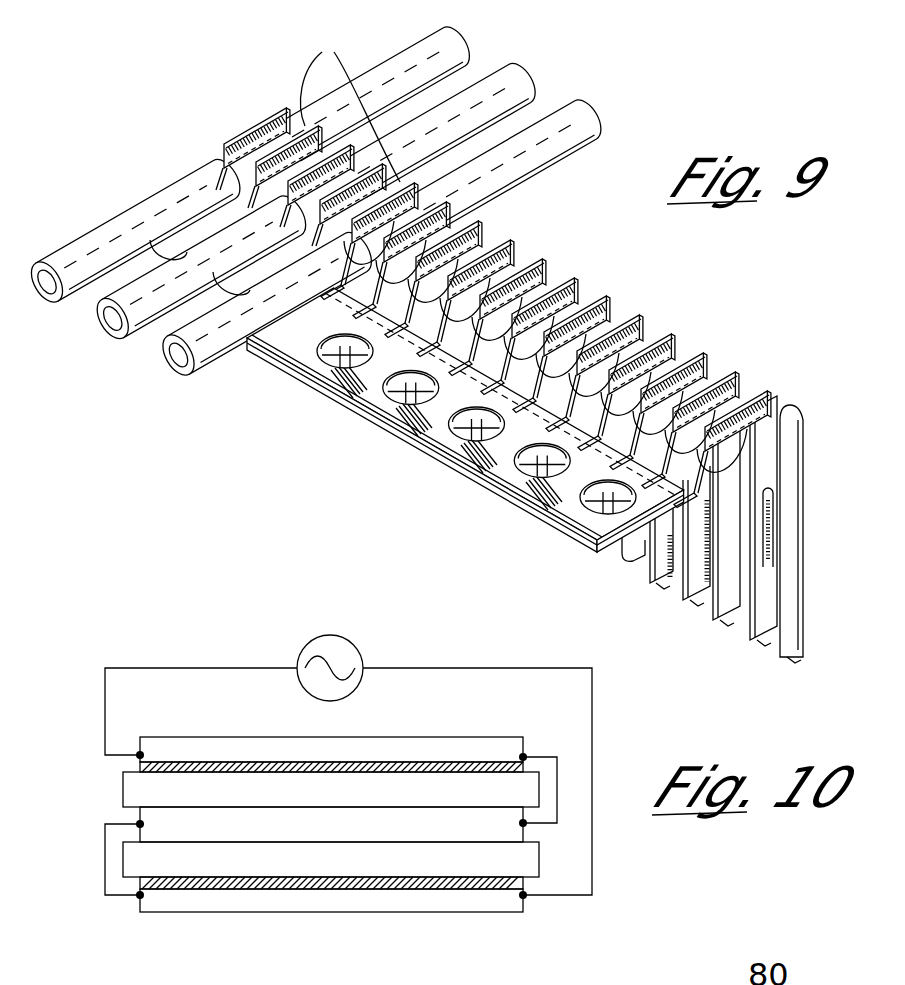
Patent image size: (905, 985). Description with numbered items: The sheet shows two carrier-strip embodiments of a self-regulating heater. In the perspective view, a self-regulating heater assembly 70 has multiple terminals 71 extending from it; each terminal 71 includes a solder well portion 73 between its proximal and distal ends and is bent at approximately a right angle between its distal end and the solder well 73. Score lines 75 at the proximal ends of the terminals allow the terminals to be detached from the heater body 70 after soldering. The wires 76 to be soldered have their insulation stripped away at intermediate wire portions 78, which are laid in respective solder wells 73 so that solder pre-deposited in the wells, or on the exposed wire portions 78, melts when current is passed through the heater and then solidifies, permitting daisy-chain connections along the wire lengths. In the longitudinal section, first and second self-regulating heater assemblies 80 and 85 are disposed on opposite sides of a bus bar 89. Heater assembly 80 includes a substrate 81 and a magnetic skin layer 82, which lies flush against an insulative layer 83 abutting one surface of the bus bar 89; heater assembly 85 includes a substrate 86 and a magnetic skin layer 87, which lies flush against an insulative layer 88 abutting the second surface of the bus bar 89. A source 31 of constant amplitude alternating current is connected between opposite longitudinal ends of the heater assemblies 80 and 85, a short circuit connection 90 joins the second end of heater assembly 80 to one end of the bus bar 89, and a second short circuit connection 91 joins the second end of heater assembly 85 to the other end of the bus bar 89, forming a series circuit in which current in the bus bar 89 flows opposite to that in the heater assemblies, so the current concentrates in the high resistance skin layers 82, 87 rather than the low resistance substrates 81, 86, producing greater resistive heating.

In FIG. 9, the self-regulating heater assembly 70 is at (490, 480).
In FIG. 9, the terminals 71 is at (787, 647).
In FIG. 9, the solder well portion 73 is at (266, 112).
In FIG. 9, the score lines 75 is at (505, 322).
In FIG. 9, the wires 76 is at (165, 358).
In FIG. 9, the exposed wire portions 78 is at (350, 95).
In FIG. 10, the first self-regulating heater assembly 80 is at (492, 700).
In FIG. 10, the source of constant amplitude alternating current 31 is at (308, 641).
In FIG. 10, the substrate 81 is at (260, 750).
In FIG. 10, the magnetic skin layer 82 is at (387, 760).
In FIG. 10, the insulative layer 83 is at (534, 768).
In FIG. 10, the second self-regulating heater assembly 85 is at (543, 920).
In FIG. 10, the substrate 86 is at (272, 902).
In FIG. 10, the magnetic skin layer 87 is at (367, 893).
In FIG. 10, the insulative layer 88 is at (530, 858).
In FIG. 10, the bus bar 89 is at (190, 817).
In FIG. 10, the short circuit connection 90 is at (523, 788).
In FIG. 10, the second short circuit connection 91 is at (105, 831).